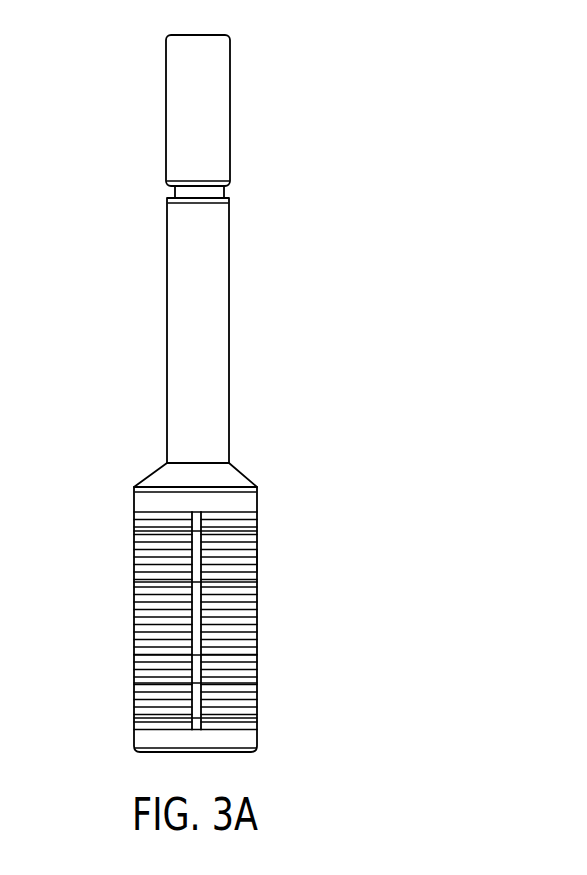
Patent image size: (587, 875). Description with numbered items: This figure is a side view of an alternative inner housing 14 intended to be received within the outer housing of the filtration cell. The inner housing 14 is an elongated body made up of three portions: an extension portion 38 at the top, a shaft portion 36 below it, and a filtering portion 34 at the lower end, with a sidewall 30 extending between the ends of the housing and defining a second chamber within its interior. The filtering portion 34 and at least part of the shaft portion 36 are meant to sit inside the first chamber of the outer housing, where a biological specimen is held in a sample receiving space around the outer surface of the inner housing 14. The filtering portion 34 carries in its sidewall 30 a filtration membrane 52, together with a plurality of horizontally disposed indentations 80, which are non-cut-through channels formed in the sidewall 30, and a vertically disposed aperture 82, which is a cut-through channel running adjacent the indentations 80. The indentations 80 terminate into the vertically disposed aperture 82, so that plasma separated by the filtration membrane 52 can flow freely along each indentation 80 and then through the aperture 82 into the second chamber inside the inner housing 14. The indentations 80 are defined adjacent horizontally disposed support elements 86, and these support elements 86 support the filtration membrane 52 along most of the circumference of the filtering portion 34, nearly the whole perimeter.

The inner housing 14 is at (272, 107).
The extension portion 38 is at (178, 115).
The shaft portion 36 is at (178, 345).
The filtering portion 34 is at (135, 539).
The horizontally disposed indentations 80 is at (135, 523).
The horizontally disposed support elements 86 is at (132, 683).
The sidewall 30 is at (257, 560).
The vertically disposed aperture 82 is at (197, 535).
The filtration membrane 52 is at (155, 557).